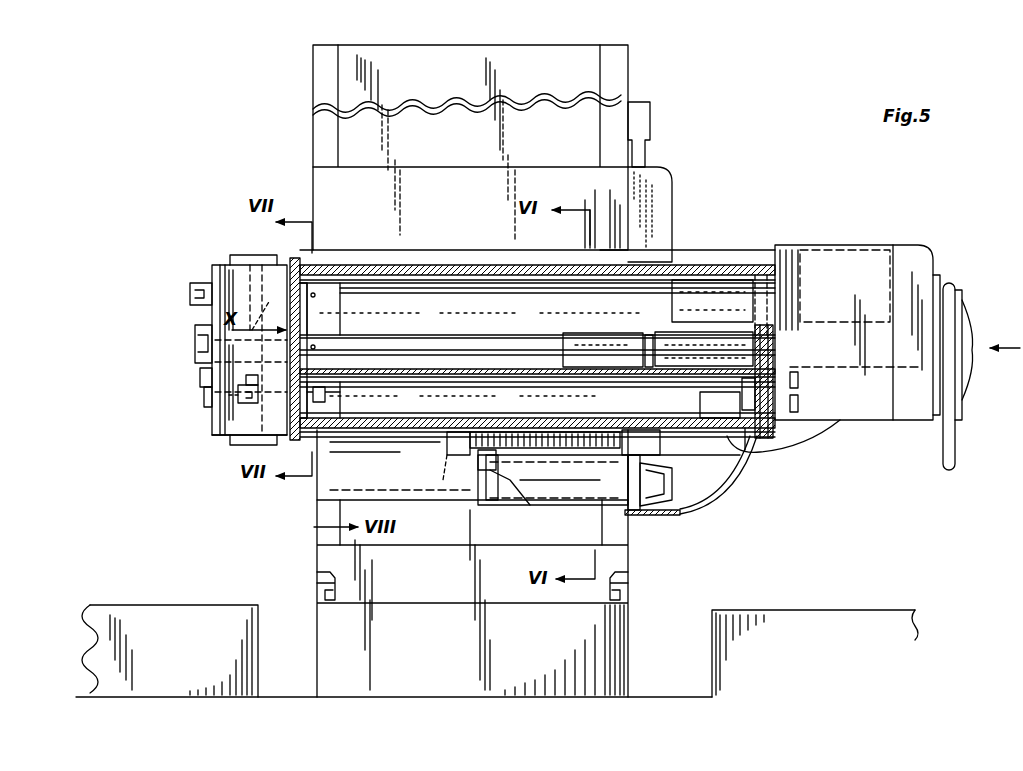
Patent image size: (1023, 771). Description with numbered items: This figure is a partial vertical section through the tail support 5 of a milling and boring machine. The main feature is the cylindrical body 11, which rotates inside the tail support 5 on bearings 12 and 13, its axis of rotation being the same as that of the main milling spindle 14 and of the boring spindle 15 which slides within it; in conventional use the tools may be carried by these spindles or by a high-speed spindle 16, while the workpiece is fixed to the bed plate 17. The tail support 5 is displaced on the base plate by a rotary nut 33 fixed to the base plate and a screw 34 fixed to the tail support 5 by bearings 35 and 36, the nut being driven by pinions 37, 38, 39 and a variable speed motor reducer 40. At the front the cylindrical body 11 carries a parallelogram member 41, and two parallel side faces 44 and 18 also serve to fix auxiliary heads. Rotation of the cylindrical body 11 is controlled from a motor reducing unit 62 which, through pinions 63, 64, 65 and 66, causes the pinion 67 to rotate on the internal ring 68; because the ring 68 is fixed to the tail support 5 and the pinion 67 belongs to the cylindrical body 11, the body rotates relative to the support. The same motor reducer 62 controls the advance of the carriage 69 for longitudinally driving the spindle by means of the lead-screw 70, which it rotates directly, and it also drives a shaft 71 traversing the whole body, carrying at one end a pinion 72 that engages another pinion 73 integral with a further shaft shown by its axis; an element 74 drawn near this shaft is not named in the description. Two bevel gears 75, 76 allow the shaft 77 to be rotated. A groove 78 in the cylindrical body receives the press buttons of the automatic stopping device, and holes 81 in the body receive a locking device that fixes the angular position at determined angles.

The tail support 5 is at (690, 266).
The cylindrical body 11 is at (457, 288).
The bearing 12 is at (322, 275).
The bearing 13 is at (730, 440).
The main milling spindle 14 is at (196, 343).
The boring spindle 15 is at (232, 362).
The spindle 16 is at (191, 294).
The bed plate 17 is at (164, 612).
The side face 18 is at (232, 264).
The rotary nut 33 is at (472, 434).
The screw 34 is at (518, 444).
The bearing 35 is at (452, 458).
The bearing 36 is at (630, 440).
The pinion 37 is at (487, 470).
The pinion 38 is at (465, 500).
The pinion 39 is at (480, 484).
The variable speed motor reducer 40 is at (563, 488).
The parallelogram member 41 is at (222, 282).
The side face 44 is at (222, 436).
The motor reducing unit 62 is at (864, 360).
The pinion 63 is at (775, 345).
The pinion 64 is at (758, 386).
The pinion 65 is at (798, 380).
The pinion 66 is at (798, 403).
The pinion 67 is at (745, 418).
The internal ring 68 is at (757, 440).
The carriage 69 is at (583, 336).
The lead-screw 70 is at (650, 338).
The shaft 71 is at (583, 380).
The pinion 72 is at (320, 376).
The pinion 73 is at (322, 402).
The jaw actuator 74 is at (232, 393).
The bevel gear 75 is at (260, 400).
The bevel gear 76 is at (265, 379).
The shaft 77 is at (268, 307).
The groove 78 is at (292, 262).
The holes 81 is at (315, 347).